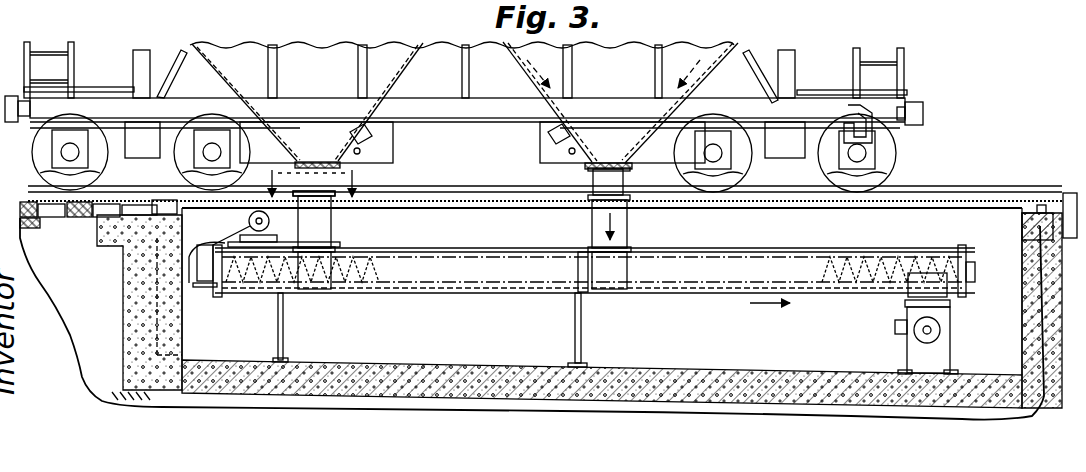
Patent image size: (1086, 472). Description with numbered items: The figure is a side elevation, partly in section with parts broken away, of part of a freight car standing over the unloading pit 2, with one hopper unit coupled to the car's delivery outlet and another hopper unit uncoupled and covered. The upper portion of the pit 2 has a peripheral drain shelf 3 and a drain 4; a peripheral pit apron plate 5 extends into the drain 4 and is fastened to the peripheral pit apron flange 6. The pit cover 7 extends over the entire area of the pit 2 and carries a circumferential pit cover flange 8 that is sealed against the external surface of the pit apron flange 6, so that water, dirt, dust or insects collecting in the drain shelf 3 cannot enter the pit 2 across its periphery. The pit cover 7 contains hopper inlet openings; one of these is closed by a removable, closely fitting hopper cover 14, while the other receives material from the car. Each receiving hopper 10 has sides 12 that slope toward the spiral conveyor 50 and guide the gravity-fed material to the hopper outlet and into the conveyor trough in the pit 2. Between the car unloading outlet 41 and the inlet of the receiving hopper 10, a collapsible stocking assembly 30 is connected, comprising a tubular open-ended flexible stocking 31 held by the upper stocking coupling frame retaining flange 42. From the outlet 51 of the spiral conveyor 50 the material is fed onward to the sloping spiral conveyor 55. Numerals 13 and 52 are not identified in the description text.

The pit 2 is at (904, 214).
The peripheral drain shelf 3 is at (116, 244).
The drain 4 is at (1070, 193).
The peripheral pit apron plate 5 is at (134, 204).
The peripheral pit apron flange 6 is at (210, 207).
The pit cover 7 is at (178, 198).
The pit cover flange 8 is at (152, 204).
The receiving hopper 10 is at (337, 236).
The sloping sides 12 is at (319, 208).
The chute upper extension 13 is at (592, 204).
The hopper cover 14 is at (331, 192).
The collapsible stocking assembly 30 is at (586, 178).
The flexible stocking 31 is at (628, 182).
The car unloading outlet 41 is at (340, 154).
The upper stocking coupling frame retaining flange 42 is at (318, 162).
The spiral conveyor 50 is at (364, 283).
The outlet 51 is at (968, 280).
The drive motor 52 is at (268, 221).
The sloping spiral conveyor 55 is at (904, 324).